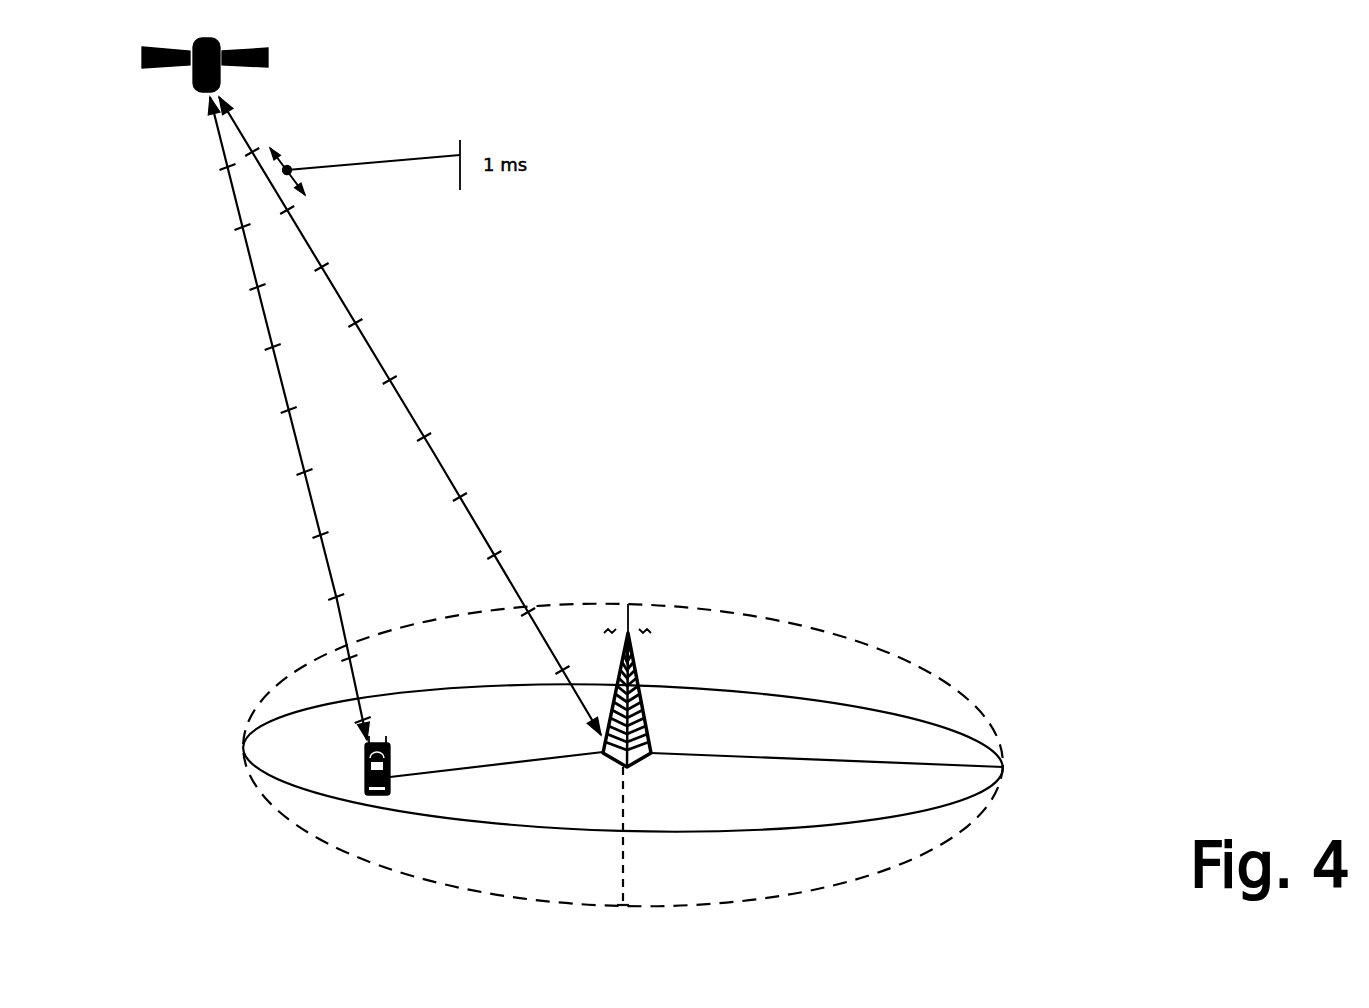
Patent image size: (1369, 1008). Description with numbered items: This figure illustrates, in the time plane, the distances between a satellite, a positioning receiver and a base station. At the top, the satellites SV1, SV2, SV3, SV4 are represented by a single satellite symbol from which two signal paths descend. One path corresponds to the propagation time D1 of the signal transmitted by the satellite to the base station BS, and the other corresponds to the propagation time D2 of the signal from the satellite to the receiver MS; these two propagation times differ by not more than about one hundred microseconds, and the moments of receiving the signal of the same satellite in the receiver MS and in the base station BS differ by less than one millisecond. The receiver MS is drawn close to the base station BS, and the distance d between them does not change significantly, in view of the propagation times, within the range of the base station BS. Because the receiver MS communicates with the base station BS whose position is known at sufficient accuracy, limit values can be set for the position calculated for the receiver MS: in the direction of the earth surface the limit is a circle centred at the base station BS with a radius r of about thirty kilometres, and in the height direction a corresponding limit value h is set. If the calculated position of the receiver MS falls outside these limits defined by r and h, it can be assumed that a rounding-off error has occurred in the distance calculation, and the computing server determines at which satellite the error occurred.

The satellite SV1 is at (335, 65).
The satellite SV2 is at (335, 65).
The satellite SV3 is at (335, 65).
The satellite SV4 is at (335, 65).
The propagation time of the signal transmitted by a satellite to the base station D1 is at (340, 297).
The propagation time from the satellite to the positioning receiver D2 is at (264, 313).
The receiver MS is at (395, 774).
The base station BS is at (612, 695).
The distance between the positioning receiver and the base station d is at (496, 753).
The limit value r is at (827, 744).
The limit value h is at (635, 836).